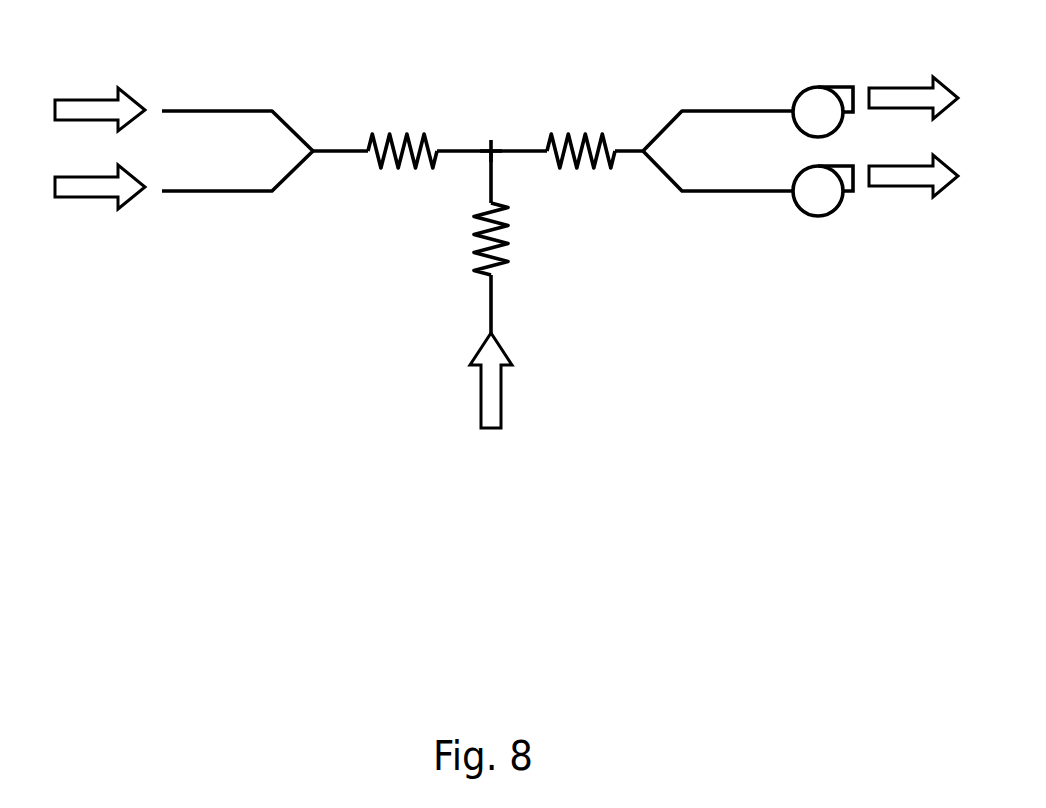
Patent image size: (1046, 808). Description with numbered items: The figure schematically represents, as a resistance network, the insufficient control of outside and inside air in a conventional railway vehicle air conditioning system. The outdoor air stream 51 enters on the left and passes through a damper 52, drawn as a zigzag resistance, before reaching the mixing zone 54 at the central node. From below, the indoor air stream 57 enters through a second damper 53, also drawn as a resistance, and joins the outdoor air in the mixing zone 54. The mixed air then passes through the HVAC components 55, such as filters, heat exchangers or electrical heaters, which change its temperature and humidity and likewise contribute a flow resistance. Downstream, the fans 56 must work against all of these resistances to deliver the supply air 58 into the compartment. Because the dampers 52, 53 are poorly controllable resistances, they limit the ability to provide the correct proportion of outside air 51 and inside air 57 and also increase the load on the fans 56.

The outdoor air stream 51 is at (97, 108).
The damper 52 is at (393, 123).
The damper 53 is at (468, 238).
The mixing zone 54 is at (491, 137).
The HVAC components 55 is at (588, 128).
The fans 56 is at (800, 100).
The indoor air stream 57 is at (483, 383).
The supply air 58 is at (910, 98).